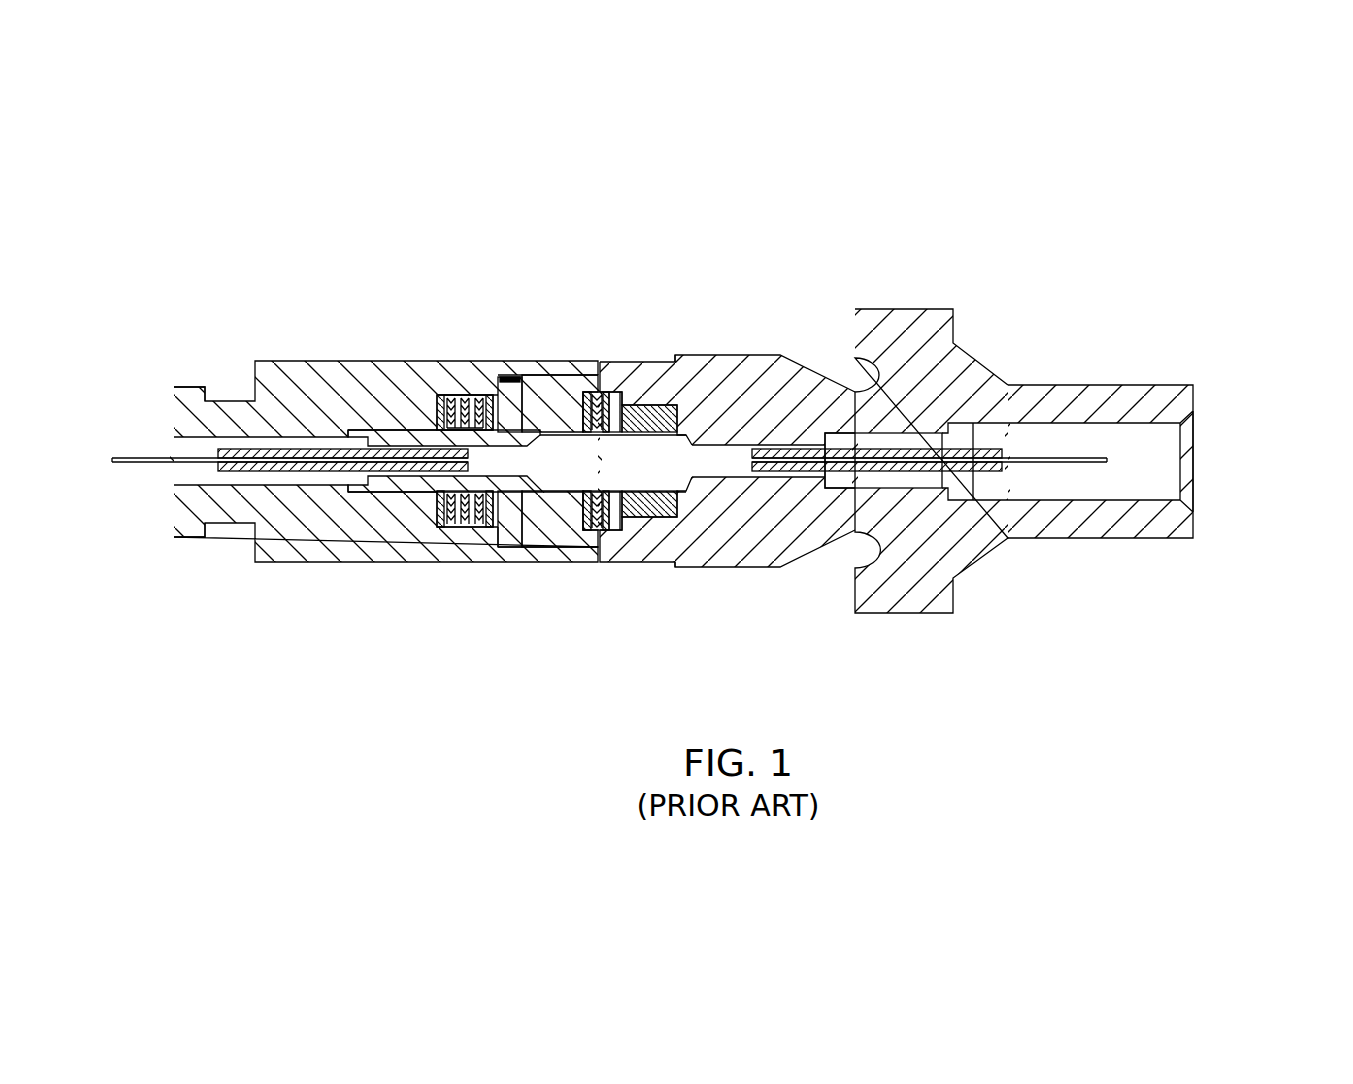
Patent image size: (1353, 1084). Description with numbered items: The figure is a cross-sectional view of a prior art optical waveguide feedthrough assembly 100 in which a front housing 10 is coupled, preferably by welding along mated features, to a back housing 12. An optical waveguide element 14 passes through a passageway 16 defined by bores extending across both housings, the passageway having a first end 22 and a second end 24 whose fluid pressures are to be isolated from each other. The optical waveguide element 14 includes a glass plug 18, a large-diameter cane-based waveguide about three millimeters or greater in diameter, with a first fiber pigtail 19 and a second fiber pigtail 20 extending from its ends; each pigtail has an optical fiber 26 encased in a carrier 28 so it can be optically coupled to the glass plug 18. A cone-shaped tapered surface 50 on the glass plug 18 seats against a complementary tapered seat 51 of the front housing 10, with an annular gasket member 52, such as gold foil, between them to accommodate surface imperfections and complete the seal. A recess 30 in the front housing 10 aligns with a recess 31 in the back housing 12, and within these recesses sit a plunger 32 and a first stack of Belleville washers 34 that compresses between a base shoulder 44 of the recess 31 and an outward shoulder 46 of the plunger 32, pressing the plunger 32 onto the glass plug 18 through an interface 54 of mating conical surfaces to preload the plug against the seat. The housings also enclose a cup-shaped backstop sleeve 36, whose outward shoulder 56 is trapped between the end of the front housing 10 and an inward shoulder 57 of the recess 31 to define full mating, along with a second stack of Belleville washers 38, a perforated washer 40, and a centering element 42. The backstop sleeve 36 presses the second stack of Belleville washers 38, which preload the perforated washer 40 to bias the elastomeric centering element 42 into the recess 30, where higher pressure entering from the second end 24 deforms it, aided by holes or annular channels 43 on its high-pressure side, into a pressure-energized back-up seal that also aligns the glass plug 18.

The optical waveguide feedthrough assembly 100 is at (1105, 254).
The front housing 10 is at (912, 613).
The back housing 12 is at (323, 562).
The optical waveguide element 14 is at (882, 443).
The passageway 16 is at (780, 447).
The glass plug 18 is at (668, 562).
The first fiber pigtail 19 is at (257, 450).
The second fiber pigtail 20 is at (974, 420).
The first end 22 is at (1195, 452).
The second end 24 is at (172, 473).
The optical fiber 26 is at (1063, 462).
The carrier 28 is at (980, 465).
The recess 30 is at (577, 390).
The recess 31 is at (466, 395).
The plunger 32 is at (388, 487).
The first stack of Belleville washers 34 is at (470, 527).
The cup-shaped backstop sleeve 36 is at (555, 547).
The second stack of Belleville washers 38 is at (607, 530).
The perforated washer 40 is at (624, 530).
The centering element 42 is at (652, 517).
The holes or annular channels 43 is at (615, 405).
The base shoulder 44 is at (440, 395).
The outward shoulder 46 is at (478, 395).
The cone-shaped tapered surface 50 is at (690, 430).
The tapered seat 51 is at (688, 466).
The gasket member 52 is at (690, 430).
The interface 54 is at (503, 377).
The outward shoulder 56 is at (513, 548).
The inward shoulder 57 is at (510, 547).